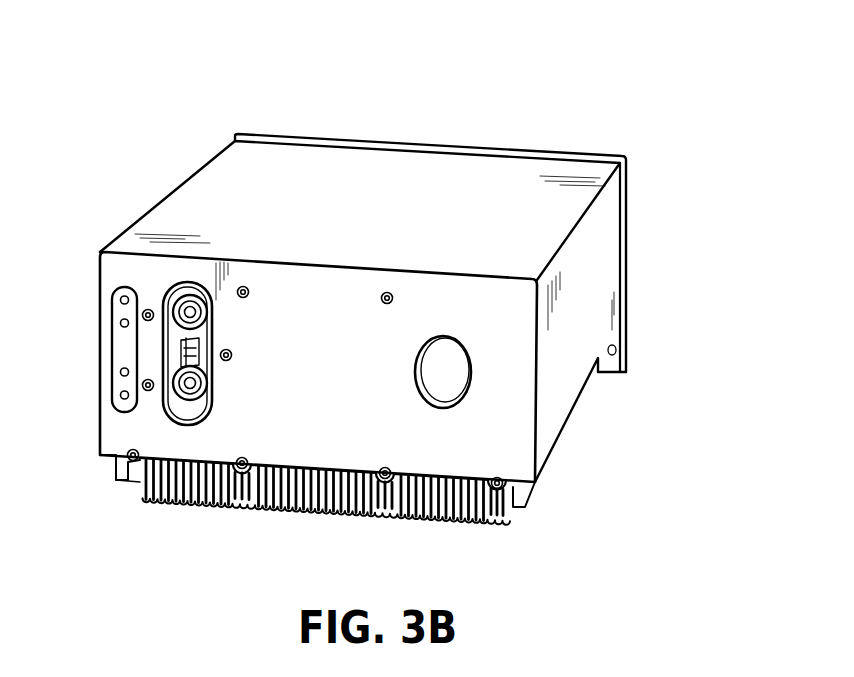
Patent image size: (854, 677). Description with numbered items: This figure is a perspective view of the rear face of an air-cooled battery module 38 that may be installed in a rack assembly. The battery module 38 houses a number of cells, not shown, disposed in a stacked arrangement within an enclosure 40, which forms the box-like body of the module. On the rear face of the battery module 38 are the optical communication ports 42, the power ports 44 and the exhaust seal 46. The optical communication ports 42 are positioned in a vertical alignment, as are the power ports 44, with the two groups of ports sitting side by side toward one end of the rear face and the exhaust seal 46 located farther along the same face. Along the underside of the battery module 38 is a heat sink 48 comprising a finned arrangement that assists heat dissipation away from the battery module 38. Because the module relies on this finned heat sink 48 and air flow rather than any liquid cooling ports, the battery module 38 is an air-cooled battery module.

The battery module 38 is at (663, 93).
The enclosure 40 is at (598, 254).
The optical communication ports 42 is at (118, 352).
The power ports 44 is at (182, 407).
The exhaust seal 46 is at (443, 380).
The heat sink 48 is at (453, 517).